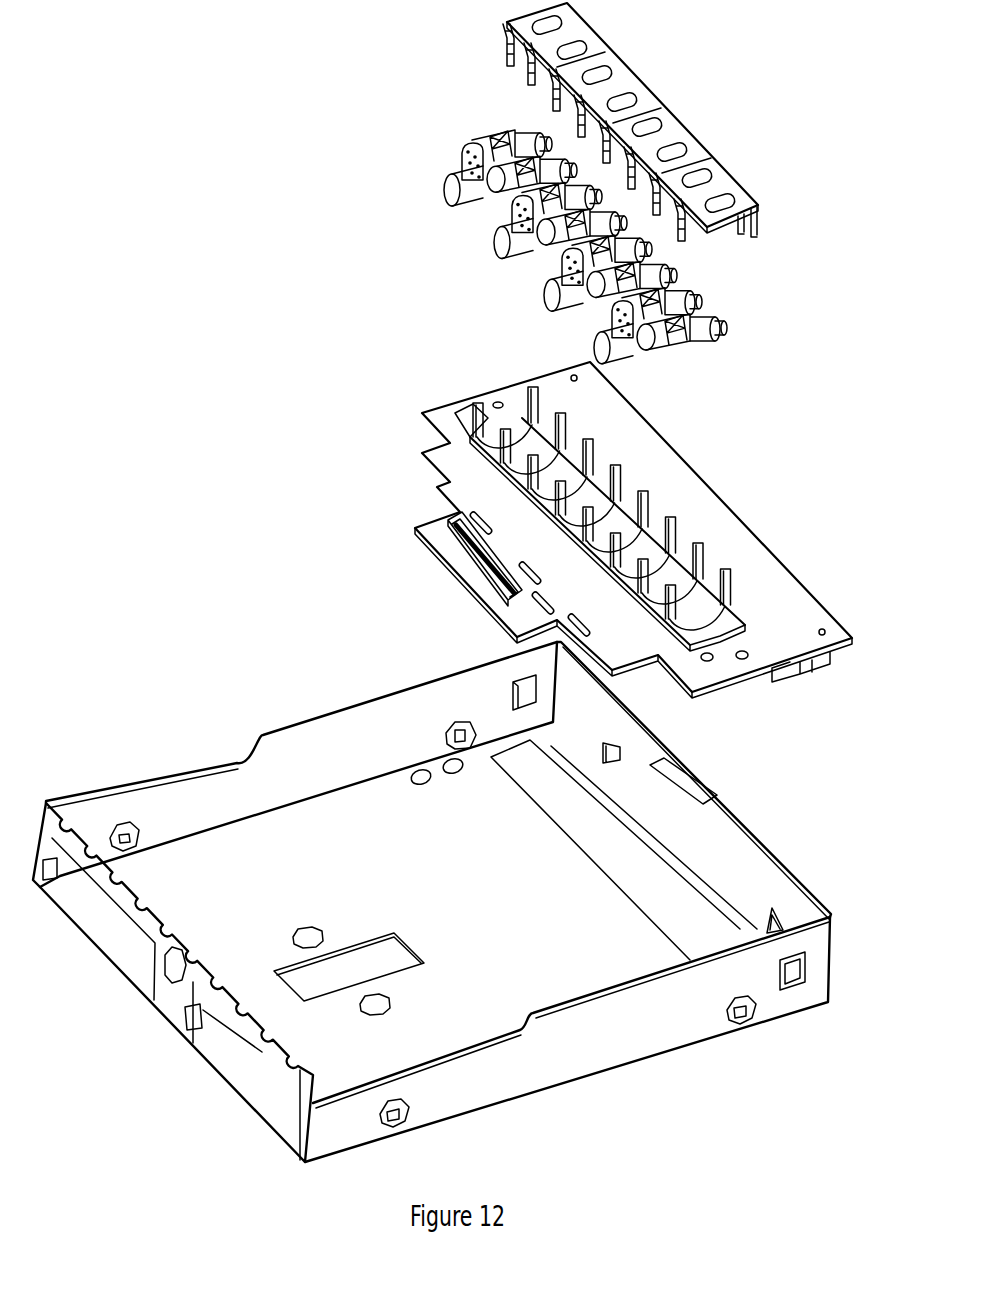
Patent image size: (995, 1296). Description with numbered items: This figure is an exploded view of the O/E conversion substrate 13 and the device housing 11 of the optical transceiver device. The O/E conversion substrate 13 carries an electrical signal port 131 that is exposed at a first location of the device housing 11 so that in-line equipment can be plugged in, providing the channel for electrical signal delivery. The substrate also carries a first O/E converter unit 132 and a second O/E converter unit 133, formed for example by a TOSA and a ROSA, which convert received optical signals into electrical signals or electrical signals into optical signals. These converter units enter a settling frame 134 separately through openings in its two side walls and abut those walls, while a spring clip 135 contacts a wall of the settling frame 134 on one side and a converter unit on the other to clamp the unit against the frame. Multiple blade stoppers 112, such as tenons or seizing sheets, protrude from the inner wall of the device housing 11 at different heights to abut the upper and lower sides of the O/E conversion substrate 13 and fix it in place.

The device housing 11 is at (662, 1025).
The blade stoppers 112 is at (523, 683).
The O/E conversion substrate 13 is at (745, 512).
The electrical signal port 131 is at (808, 674).
The first O/E converter unit 132 is at (500, 135).
The second O/E converter unit 133 is at (510, 233).
The settling frame 134 is at (735, 612).
The spring clip 135 is at (723, 188).